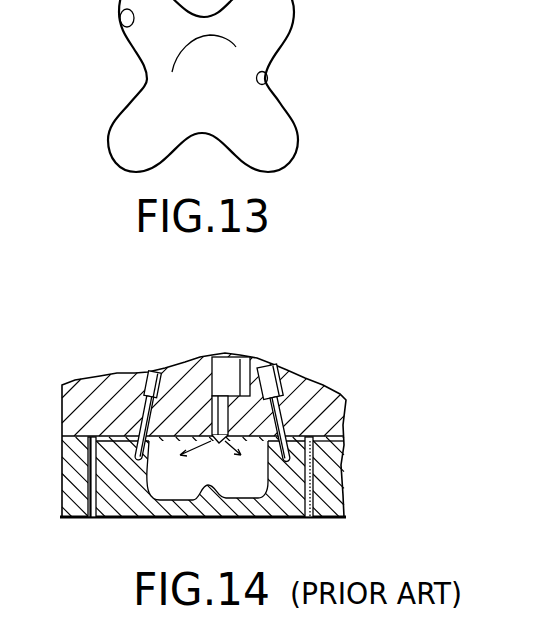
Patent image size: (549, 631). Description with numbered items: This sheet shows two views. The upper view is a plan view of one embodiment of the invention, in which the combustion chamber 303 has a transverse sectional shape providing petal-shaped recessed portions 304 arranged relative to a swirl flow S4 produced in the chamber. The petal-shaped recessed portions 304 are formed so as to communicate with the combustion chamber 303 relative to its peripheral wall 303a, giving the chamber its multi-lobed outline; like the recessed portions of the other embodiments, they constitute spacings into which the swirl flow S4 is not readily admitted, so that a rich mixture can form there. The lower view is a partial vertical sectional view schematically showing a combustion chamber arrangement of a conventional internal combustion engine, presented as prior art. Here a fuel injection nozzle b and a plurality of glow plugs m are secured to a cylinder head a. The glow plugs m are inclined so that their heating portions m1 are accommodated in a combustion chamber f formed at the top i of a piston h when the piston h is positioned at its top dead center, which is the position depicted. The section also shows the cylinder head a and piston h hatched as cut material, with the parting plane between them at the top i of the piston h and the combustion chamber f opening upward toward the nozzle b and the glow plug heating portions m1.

In FIG. 13, the combustion chamber 303 is at (224, 100).
In FIG. 13, the peripheral wall 303a is at (267, 82).
In FIG. 13, the petal-shaped recessed portions 304 is at (120, 24).
In FIG. 13, the swirl flow S4 is at (236, 47).
In FIG. 14, the cylinder head a is at (312, 402).
In FIG. 14, the fuel injection nozzle b is at (231, 375).
In FIG. 14, the glow plugs m is at (157, 372).
In FIG. 14, the heating portions m1 is at (176, 459).
In FIG. 14, the top of piston i is at (292, 438).
In FIG. 14, the combustion chamber f is at (162, 490).
In FIG. 14, the piston h is at (262, 507).